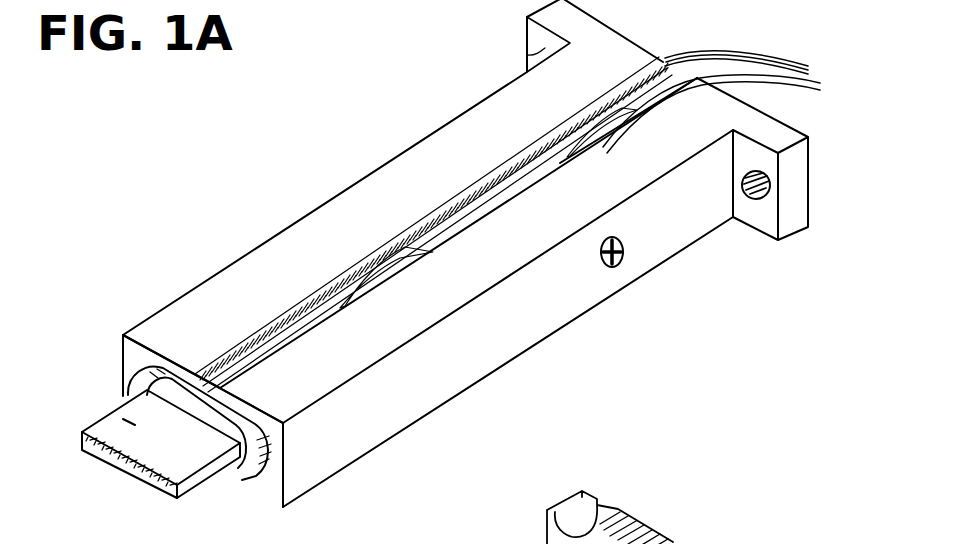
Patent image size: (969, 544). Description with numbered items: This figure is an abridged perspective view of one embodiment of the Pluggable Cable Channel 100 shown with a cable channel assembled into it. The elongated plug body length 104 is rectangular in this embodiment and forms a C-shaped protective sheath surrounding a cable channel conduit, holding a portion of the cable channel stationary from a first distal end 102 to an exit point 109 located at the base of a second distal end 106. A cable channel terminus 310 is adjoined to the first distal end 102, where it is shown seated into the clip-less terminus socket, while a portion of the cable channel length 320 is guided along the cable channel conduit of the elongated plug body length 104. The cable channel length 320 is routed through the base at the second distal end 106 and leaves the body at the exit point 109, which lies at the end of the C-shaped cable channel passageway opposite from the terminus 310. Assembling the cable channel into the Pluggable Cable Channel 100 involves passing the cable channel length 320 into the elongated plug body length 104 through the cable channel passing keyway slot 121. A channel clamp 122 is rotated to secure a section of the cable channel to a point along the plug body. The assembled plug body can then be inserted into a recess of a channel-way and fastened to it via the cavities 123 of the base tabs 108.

The Pluggable Cable Channel 100 is at (507, 0).
The first distal end 102 is at (190, 327).
The elongated plug body length 104 is at (307, 215).
The second distal end 106 is at (600, 62).
The base tabs 108 is at (567, 22).
The exit point 109 is at (668, 41).
The cable channel passing keyway slot 121 is at (493, 192).
The channel clamp 122 is at (626, 259).
The cavities 123 is at (760, 200).
The cable channel terminus 310 is at (200, 392).
The cable channel length 320 is at (757, 65).